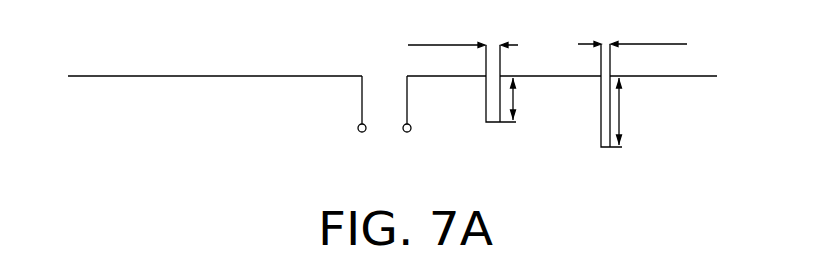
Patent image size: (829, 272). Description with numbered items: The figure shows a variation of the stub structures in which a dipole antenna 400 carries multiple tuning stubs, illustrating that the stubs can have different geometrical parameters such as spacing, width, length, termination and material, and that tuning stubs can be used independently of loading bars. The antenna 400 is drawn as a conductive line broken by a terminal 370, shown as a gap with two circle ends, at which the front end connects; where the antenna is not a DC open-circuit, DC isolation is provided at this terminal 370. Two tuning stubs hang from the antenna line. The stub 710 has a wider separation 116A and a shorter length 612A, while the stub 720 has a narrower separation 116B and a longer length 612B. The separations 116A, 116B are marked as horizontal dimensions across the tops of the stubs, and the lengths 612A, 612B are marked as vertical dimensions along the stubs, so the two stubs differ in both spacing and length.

The dipole antenna 400 is at (182, 76).
The terminal 370 is at (404, 131).
The stub 710 is at (490, 125).
The stub 720 is at (605, 150).
The separation 116A is at (463, 33).
The separation 116B is at (632, 32).
The length 612A is at (547, 99).
The length 612B is at (655, 111).